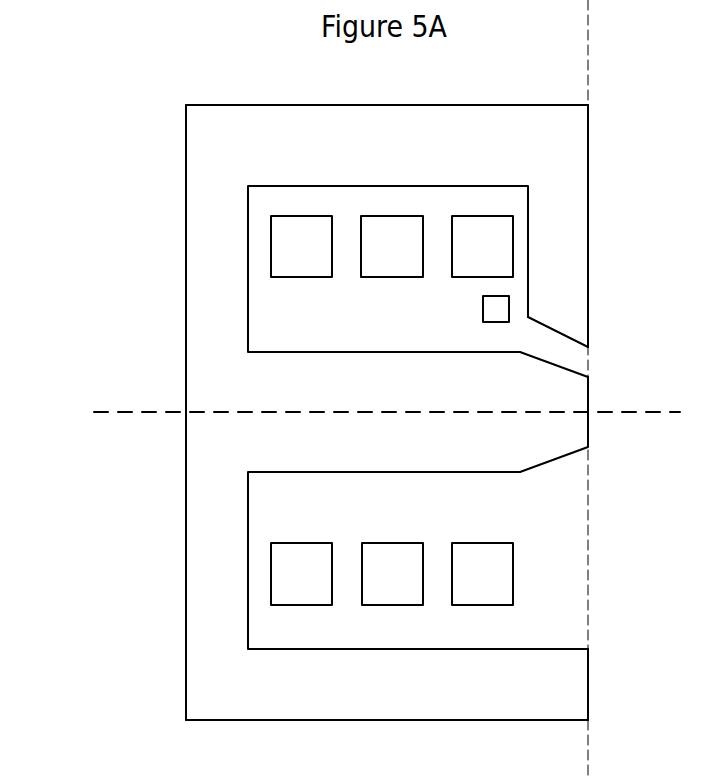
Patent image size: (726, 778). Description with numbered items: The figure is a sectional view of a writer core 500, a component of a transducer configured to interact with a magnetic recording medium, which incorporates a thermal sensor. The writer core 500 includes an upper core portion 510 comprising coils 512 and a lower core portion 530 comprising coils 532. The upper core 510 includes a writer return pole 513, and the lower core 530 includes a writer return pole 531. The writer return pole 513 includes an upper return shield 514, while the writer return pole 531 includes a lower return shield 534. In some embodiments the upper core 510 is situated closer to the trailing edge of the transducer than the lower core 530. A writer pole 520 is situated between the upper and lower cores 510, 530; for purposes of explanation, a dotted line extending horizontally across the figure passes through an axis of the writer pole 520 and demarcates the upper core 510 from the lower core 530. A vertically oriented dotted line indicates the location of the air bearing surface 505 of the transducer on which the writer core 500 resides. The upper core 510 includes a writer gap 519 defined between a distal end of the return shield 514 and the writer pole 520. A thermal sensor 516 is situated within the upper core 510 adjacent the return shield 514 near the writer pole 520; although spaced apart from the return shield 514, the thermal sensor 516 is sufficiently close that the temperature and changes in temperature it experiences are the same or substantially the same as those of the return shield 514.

The writer core 500 is at (495, 75).
The air bearing surface 505 is at (627, 569).
The upper core portion 510 is at (156, 218).
The coils 512 is at (339, 304).
The writer return pole 513 is at (410, 155).
The upper return shield 514 is at (588, 212).
The thermal sensor 516 is at (483, 309).
The writer gap 519 is at (605, 362).
The writer pole 520 is at (588, 393).
The lower core portion 530 is at (158, 615).
The writer return pole 531 is at (410, 694).
The coils 532 is at (390, 525).
The lower return shield 534 is at (588, 683).